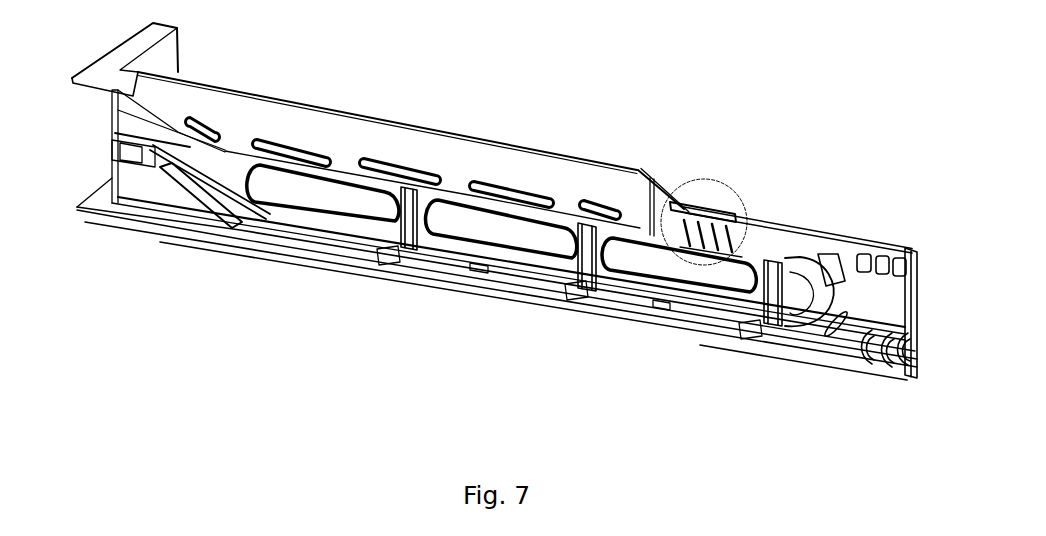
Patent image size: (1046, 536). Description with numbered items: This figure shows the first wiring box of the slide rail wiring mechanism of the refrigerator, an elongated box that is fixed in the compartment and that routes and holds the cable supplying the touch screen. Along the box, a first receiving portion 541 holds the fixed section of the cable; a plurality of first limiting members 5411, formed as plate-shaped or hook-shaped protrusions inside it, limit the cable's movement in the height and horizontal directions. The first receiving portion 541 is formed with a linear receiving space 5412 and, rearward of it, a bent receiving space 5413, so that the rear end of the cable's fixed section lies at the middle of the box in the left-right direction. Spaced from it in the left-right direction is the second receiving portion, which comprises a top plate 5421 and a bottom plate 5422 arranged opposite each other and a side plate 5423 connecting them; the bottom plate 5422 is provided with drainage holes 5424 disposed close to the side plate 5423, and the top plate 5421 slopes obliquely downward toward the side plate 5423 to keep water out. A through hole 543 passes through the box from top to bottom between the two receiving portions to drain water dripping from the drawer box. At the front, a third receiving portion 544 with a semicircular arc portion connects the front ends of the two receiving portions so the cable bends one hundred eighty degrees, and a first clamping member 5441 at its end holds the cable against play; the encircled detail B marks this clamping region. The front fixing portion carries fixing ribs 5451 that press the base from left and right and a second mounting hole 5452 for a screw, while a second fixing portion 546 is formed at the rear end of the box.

The first receiving portion 541 is at (422, 258).
The first limiting members 5411 is at (293, 215).
The linear receiving space 5412 is at (530, 278).
The bent receiving space 5413 is at (197, 180).
The top plate 5421 is at (662, 190).
The bottom plate 5422 is at (229, 107).
The side plate 5423 is at (681, 265).
The drainage holes 5424 is at (320, 147).
The through hole 543 is at (560, 224).
The third receiving portion 544 is at (843, 325).
The first clamping member 5441 is at (722, 208).
The fixing ribs 5451 is at (870, 257).
The second mounting hole 5452 is at (880, 362).
The second fixing portion 546 is at (128, 40).
The detail region B is at (747, 200).